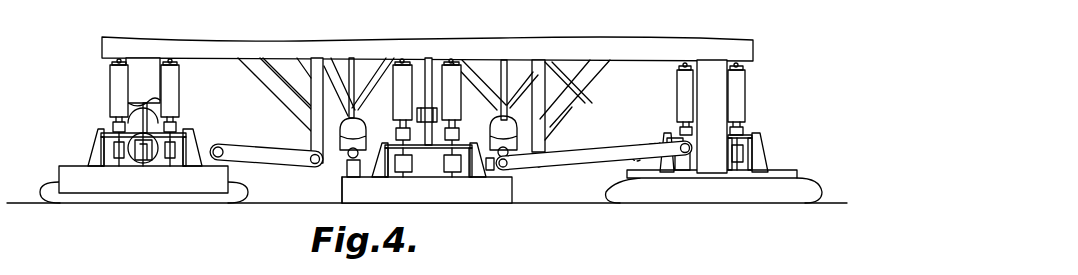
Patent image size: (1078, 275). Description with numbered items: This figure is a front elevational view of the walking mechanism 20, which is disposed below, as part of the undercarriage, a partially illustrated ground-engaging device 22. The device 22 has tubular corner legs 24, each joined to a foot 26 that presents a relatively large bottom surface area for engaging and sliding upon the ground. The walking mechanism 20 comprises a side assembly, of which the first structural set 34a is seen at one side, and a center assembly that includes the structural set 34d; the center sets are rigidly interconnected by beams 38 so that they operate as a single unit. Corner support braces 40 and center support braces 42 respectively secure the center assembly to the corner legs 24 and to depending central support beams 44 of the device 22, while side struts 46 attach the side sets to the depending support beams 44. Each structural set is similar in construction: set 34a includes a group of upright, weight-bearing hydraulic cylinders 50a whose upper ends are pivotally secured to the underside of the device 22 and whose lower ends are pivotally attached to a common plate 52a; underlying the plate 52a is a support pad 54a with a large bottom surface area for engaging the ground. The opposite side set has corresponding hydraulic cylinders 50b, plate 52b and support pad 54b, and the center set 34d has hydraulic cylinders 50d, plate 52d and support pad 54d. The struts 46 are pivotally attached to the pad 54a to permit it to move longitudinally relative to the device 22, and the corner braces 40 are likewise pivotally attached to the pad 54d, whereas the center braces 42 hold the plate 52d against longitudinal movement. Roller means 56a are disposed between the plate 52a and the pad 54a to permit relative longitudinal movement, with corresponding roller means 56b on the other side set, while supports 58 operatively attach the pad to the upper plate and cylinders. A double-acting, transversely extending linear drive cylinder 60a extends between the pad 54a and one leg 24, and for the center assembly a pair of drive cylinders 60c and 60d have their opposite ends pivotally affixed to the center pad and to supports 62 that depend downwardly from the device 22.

The walking mechanism 20 is at (816, 96).
The ground-engaging device 22 is at (755, 32).
The tubular corner leg 24 is at (142, 62).
The foot 26 is at (53, 199).
The first structural set 34a is at (88, 198).
The structural set 34d is at (513, 192).
The beam 38 is at (348, 170).
The corner support brace 40 is at (526, 168).
The center support brace 42 is at (421, 130).
The central support beam 44 is at (320, 61).
The side strut 46 is at (268, 159).
The hydraulic cylinder 50a is at (178, 79).
The hydraulic cylinder 50b is at (746, 82).
The hydraulic cylinder 50d is at (458, 73).
The plate 52a is at (173, 128).
The plate 52b is at (743, 135).
The plate 52d is at (394, 141).
The support pad 54a is at (192, 187).
The support pad 54b is at (800, 176).
The support pad 54d is at (491, 200).
The roller means 56a is at (110, 148).
The roller means 56b is at (752, 152).
The support 58 is at (191, 133).
The drive cylinder 60a is at (140, 121).
The drive cylinder 60c is at (499, 129).
The drive cylinder 60d is at (340, 135).
The support 62 is at (345, 61).